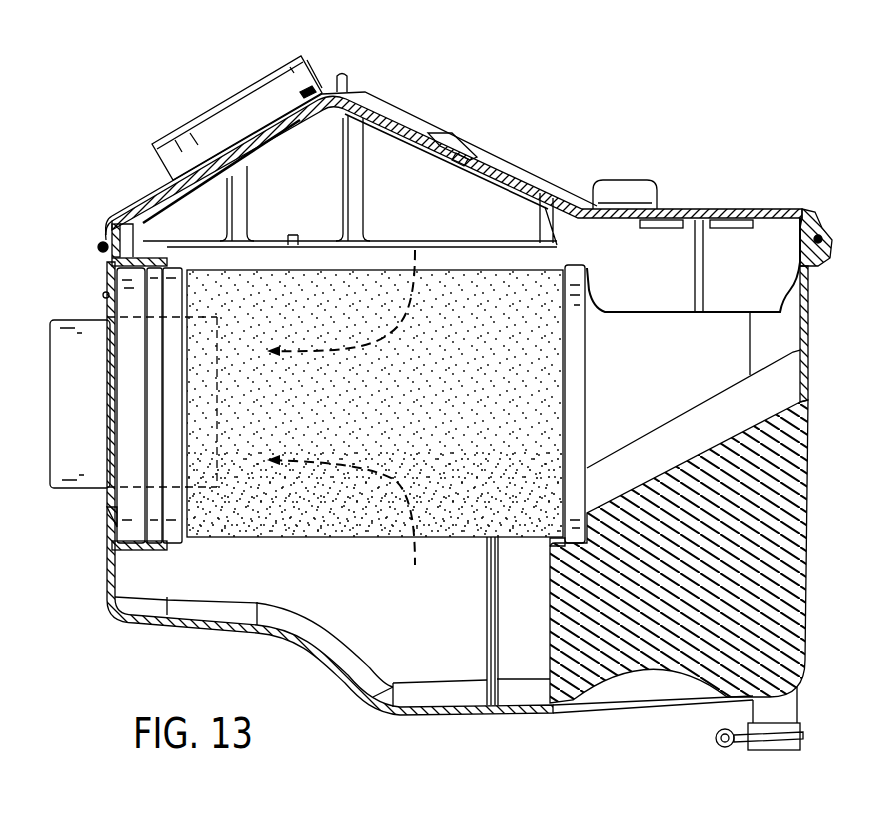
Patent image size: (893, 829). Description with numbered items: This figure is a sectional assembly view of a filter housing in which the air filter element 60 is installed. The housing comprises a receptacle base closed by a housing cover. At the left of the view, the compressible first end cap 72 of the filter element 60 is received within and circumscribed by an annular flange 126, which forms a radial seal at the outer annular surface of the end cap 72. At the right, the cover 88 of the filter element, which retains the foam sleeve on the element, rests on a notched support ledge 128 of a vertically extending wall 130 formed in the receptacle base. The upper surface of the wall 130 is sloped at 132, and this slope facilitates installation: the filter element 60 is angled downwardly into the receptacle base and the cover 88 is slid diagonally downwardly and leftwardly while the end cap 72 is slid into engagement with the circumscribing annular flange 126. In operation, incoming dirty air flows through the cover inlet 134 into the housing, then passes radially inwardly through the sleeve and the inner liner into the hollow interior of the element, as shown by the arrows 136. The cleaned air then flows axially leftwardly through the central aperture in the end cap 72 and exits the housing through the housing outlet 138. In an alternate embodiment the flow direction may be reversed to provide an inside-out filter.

The air filter element 60 is at (374, 540).
The first end cap 72 is at (130, 523).
The cover 88 is at (588, 373).
The annular flange 126 is at (140, 547).
The notched support ledge 128 is at (563, 532).
The vertically extending wall 130 is at (575, 626).
The sloped upper surface 132 is at (693, 452).
The cover inlet 134 is at (250, 83).
The arrows 136 is at (388, 472).
The housing outlet 138 is at (52, 348).